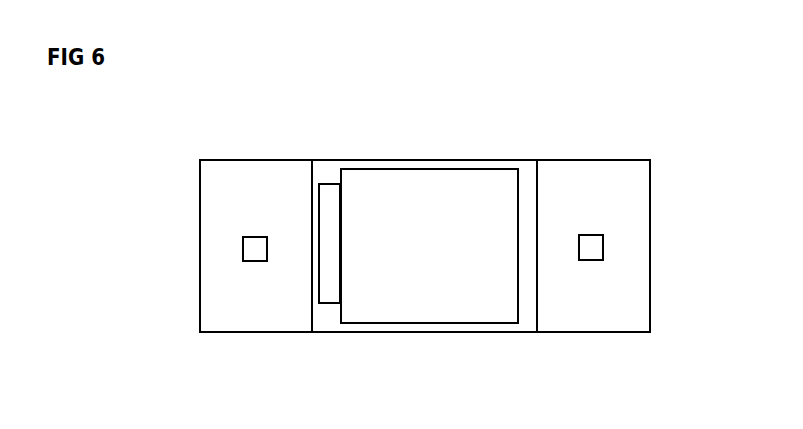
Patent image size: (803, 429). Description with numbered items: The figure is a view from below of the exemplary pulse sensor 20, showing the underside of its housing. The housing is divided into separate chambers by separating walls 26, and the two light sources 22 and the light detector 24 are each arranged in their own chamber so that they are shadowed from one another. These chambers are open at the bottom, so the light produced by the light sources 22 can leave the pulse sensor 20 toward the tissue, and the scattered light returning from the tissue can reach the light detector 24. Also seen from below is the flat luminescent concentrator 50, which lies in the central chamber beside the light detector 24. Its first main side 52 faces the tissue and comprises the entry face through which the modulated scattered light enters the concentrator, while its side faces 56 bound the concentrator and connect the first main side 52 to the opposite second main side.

The pulse sensor 20 is at (199, 243).
The light source 22 is at (253, 236).
The light detector 24 is at (319, 258).
The separating wall 26 is at (313, 180).
The luminescent concentrator 50 is at (391, 168).
The first main side 52 is at (370, 310).
The side face 56 is at (446, 168).